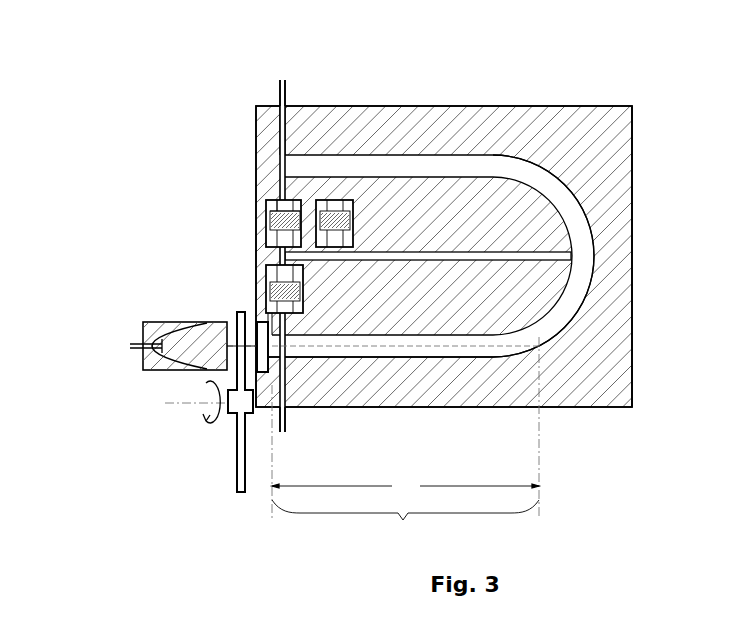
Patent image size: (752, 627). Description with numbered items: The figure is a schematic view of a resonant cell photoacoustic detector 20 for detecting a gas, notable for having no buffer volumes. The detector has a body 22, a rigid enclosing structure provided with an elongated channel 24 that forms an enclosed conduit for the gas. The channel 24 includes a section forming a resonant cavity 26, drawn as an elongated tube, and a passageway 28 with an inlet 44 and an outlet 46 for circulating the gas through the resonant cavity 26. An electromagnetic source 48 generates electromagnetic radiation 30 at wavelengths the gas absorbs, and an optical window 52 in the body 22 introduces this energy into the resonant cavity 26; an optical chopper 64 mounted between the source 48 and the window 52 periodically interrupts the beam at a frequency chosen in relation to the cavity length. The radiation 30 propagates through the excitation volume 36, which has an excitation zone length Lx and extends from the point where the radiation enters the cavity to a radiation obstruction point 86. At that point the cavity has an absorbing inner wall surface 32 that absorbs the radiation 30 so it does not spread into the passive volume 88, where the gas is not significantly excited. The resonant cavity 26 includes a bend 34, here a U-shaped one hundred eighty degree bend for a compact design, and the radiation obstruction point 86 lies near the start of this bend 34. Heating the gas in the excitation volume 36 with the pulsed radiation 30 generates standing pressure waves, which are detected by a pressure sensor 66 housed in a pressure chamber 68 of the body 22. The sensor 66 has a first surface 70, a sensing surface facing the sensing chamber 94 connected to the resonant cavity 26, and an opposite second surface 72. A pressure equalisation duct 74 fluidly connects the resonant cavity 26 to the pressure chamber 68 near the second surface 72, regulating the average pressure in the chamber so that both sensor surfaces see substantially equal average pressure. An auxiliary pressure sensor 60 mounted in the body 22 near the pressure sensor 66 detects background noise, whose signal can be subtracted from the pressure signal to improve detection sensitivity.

The photoacoustic detector 20 is at (673, 83).
The body 22 is at (578, 407).
The channel 24 is at (283, 130).
The resonant cavity 26 is at (418, 163).
The passageway 28 is at (282, 78).
The electromagnetic radiation 30 is at (433, 345).
The absorbing inner wall surface 32 is at (553, 184).
The bend 34 is at (587, 215).
The excitation volume 36 is at (405, 440).
The inlet 44 is at (286, 416).
The outlet 46 is at (279, 91).
The electromagnetic source 48 is at (150, 343).
The optical window 52 is at (262, 327).
The auxiliary pressure sensor 60 is at (343, 217).
The optical chopper 64 is at (240, 458).
The pressure sensor 66 is at (272, 228).
The pressure chamber 68 is at (271, 234).
The first surface 70 is at (287, 205).
The second surface 72 is at (270, 240).
The pressure equalisation duct 74 is at (543, 258).
The radiation obstruction point 86 is at (540, 348).
The passive volume 88 is at (570, 203).
The sensing chamber 94 is at (276, 210).